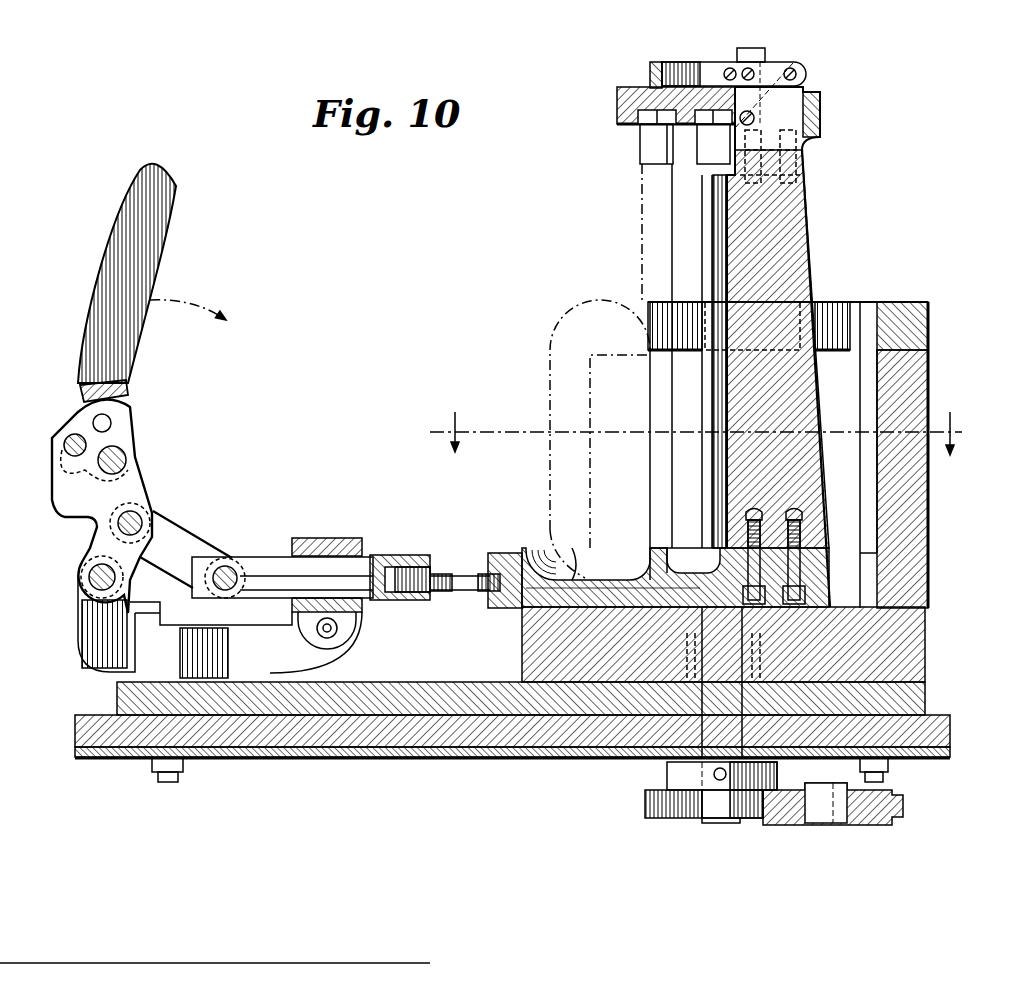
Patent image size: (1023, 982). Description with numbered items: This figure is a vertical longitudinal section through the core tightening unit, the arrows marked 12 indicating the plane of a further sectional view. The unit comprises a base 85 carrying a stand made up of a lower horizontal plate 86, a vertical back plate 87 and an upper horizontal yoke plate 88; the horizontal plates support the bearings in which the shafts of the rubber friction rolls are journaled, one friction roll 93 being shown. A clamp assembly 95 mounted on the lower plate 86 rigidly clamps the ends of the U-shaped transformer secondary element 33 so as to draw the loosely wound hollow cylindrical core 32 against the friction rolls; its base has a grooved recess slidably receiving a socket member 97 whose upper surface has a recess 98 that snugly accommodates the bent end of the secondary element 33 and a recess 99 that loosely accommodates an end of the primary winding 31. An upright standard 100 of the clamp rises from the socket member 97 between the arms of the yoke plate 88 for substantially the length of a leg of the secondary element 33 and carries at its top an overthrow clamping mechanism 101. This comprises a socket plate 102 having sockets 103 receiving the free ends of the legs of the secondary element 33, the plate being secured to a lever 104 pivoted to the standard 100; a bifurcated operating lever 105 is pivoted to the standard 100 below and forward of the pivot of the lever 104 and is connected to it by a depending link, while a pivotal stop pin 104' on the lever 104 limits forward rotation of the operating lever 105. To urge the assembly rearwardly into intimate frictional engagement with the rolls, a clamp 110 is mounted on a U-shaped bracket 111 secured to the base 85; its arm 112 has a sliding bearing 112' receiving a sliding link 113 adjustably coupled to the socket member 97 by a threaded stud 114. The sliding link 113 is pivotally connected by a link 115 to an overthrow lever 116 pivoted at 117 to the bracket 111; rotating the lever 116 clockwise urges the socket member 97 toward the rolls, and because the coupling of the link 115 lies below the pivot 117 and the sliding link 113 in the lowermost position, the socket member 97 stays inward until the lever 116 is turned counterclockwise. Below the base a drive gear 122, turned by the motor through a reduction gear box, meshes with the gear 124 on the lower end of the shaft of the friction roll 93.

The section line 12- 12 is at (707, 431).
The primary winding 31 is at (568, 338).
The hollow cylindrical core 32 is at (595, 375).
The U-shaped transformer secondary element 33 is at (650, 210).
The base 85 is at (405, 688).
The lower horizontal plate 86 is at (520, 650).
The vertical back plate 87 is at (920, 516).
The upper horizontal yoke plate 88 is at (897, 308).
The rubber friction roll 93 is at (663, 478).
The clamp assembly 95 is at (812, 228).
The slidable socket member 97 is at (529, 553).
The recess 98 is at (665, 548).
The recess 99 is at (580, 552).
The upright standard 100 is at (812, 277).
The overthrow clamping mechanism 101 is at (645, 70).
The socket plate 102 is at (617, 101).
The socket 103 is at (655, 128).
The lever 104 is at (759, 93).
The pivotal stop pin 104' is at (710, 60).
The operating lever 105 is at (765, 52).
The clamp 110 is at (160, 505).
The U-shaped bracket 111 is at (95, 625).
The arm 112 is at (327, 527).
The sliding bearing 112' is at (327, 591).
The sliding link 113 is at (388, 558).
The threaded stud 114 is at (455, 572).
The link 115 is at (185, 537).
The lever 116 is at (118, 356).
The pivot 117 is at (90, 574).
The drive gear 122 is at (882, 797).
The gear 124 is at (680, 771).